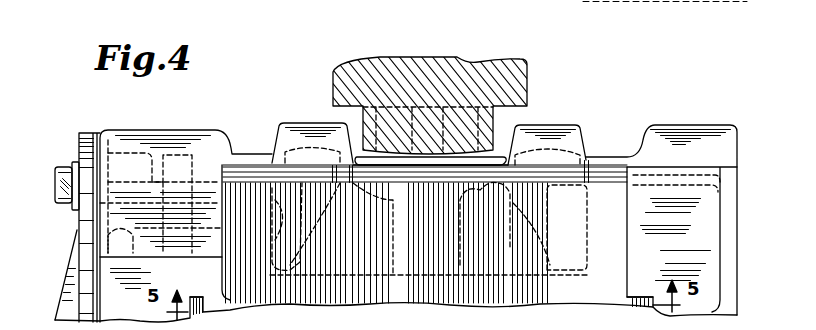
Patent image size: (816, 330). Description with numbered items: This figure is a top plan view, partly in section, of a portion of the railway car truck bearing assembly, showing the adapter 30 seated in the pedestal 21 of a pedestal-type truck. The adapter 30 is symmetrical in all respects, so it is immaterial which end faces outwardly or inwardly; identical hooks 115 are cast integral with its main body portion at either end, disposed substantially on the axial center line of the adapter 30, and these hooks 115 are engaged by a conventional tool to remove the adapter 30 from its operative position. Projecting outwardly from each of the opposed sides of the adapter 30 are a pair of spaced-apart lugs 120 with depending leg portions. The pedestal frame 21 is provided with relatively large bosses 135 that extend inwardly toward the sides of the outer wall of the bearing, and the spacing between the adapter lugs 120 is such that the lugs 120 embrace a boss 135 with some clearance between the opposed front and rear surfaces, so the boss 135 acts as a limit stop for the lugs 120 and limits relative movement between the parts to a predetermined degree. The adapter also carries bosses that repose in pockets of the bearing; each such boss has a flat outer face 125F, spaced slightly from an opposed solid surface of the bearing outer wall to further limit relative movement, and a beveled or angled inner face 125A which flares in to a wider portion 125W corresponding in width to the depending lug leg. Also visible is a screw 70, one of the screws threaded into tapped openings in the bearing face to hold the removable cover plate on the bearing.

The pedestal 21 is at (480, 61).
The boss 135 is at (500, 124).
The lug 120 is at (300, 130).
The adapter 30 is at (632, 204).
The screw 70 is at (57, 185).
The wider portion 125W is at (485, 223).
The angled inner face 125A is at (513, 239).
The flat outer face 125F is at (588, 244).
The hook 115 is at (200, 300).